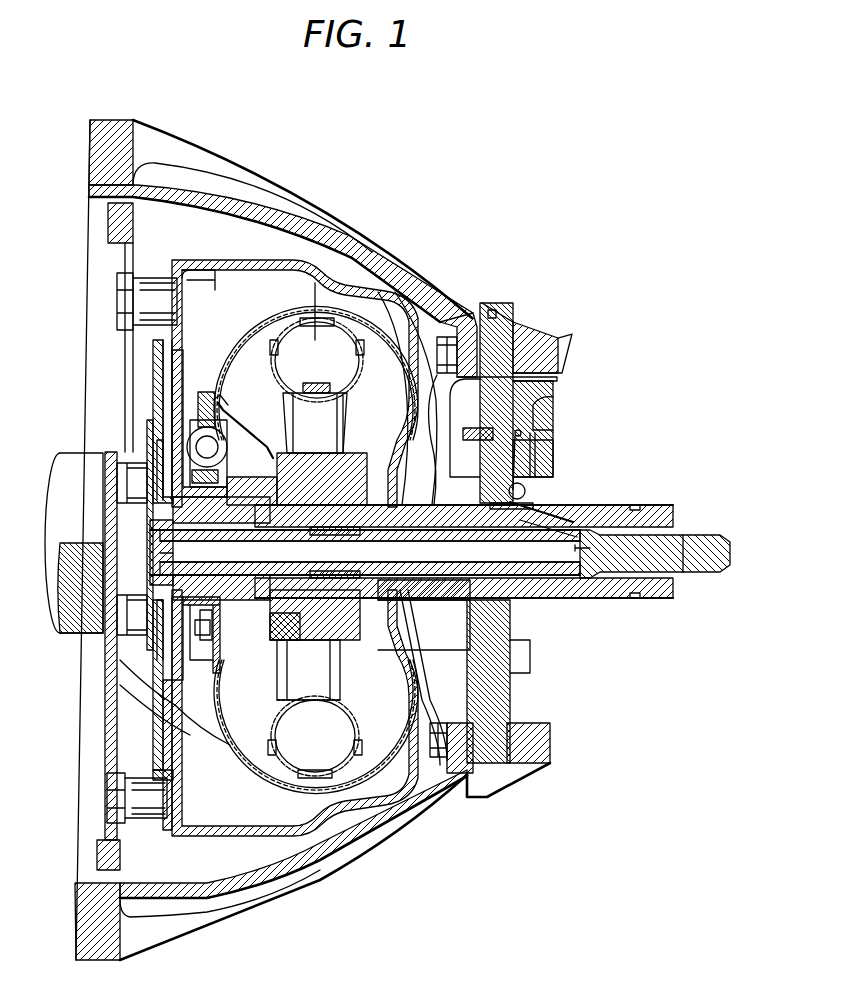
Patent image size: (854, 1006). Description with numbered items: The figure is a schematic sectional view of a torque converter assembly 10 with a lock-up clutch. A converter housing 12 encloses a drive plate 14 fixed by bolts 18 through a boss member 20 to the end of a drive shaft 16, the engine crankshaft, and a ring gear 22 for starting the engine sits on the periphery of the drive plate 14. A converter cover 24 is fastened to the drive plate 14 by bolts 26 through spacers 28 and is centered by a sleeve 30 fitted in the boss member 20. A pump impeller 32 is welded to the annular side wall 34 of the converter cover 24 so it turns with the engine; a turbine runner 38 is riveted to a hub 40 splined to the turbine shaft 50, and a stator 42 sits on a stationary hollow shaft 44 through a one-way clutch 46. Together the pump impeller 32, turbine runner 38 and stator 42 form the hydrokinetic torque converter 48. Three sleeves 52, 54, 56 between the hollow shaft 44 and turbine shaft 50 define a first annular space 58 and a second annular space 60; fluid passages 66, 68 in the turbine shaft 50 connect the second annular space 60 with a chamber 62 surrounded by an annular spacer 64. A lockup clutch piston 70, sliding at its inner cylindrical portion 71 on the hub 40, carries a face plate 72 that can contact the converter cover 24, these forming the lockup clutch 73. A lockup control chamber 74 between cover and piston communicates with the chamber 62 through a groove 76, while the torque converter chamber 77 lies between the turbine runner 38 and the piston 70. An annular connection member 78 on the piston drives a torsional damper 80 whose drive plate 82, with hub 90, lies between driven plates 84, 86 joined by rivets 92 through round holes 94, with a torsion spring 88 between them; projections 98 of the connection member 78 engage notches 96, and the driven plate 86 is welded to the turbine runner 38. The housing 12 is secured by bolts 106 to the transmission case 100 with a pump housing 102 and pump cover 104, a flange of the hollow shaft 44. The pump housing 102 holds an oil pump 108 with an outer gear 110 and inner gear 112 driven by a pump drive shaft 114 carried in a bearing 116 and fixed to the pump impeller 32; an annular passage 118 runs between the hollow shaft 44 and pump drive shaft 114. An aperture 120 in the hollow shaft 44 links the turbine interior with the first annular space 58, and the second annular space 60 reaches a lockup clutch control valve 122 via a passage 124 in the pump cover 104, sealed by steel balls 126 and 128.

The torque converter assembly 10 is at (311, 136).
The converter housing 12 is at (293, 223).
The drive plate 14 is at (117, 698).
The drive shaft 16 is at (67, 457).
The bolts 18 is at (113, 655).
The boss member 20 is at (103, 488).
The ring gear 22 is at (107, 227).
The converter cover 24 is at (147, 733).
The bolts 26 is at (107, 795).
The spacers 28 is at (143, 795).
The sleeve 30 is at (157, 535).
The pump impeller 32 is at (343, 268).
The annular side wall 34 is at (230, 260).
The turbine runner 38 is at (250, 310).
The hub 40 is at (180, 637).
The stator 42 is at (298, 443).
The stationary hollow shaft 44 is at (398, 602).
The one-way clutch 46 is at (343, 457).
The hydrokinetic torque converter 48 is at (370, 293).
The turbine shaft 50 is at (705, 573).
The spacer 52 is at (292, 610).
The spacer 54 is at (560, 520).
The spacer 56 is at (670, 533).
The first annular space 58 is at (305, 585).
The second annular space 60 is at (607, 527).
The chamber 62 is at (140, 563).
The annular spacer 64 is at (110, 587).
The fluid passage 66 is at (557, 550).
The fluid passage 68 is at (578, 540).
The lockup clutch piston 70 is at (160, 330).
The inner cylindrical portion 71 is at (163, 553).
The face plate 72 is at (197, 290).
The lockup clutch 73 is at (170, 293).
The lockup control chamber 74 is at (168, 368).
The groove 76 is at (167, 520).
The torque converter chamber 77 is at (221, 336).
The annular connection member 78 is at (152, 343).
The torsional damper 80 is at (230, 403).
The drive plate 82 is at (165, 668).
The driven plate 84 is at (196, 398).
The driven plate 86 is at (273, 373).
The torsion spring 88 is at (185, 435).
The hub 90 is at (260, 437).
The rivets 92 is at (173, 697).
The round holes 94 is at (247, 660).
The notches 96 is at (223, 670).
The projections 98 is at (207, 672).
The transmission case 100 is at (543, 333).
The pump housing 102 is at (493, 350).
The pump cover 104 is at (517, 350).
The bolts 106 is at (443, 333).
The oil pump 108 is at (540, 412).
The outer gear 110 is at (513, 417).
The inner gear 112 is at (520, 407).
The pump drive shaft 114 is at (378, 313).
The bearing 116 is at (420, 390).
The annular passage 118 is at (450, 582).
The aperture 120 is at (278, 628).
The lockup clutch control valve 122 is at (530, 477).
The passage 124 is at (533, 520).
The steel ball 126 is at (523, 437).
The steel ball 128 is at (497, 430).